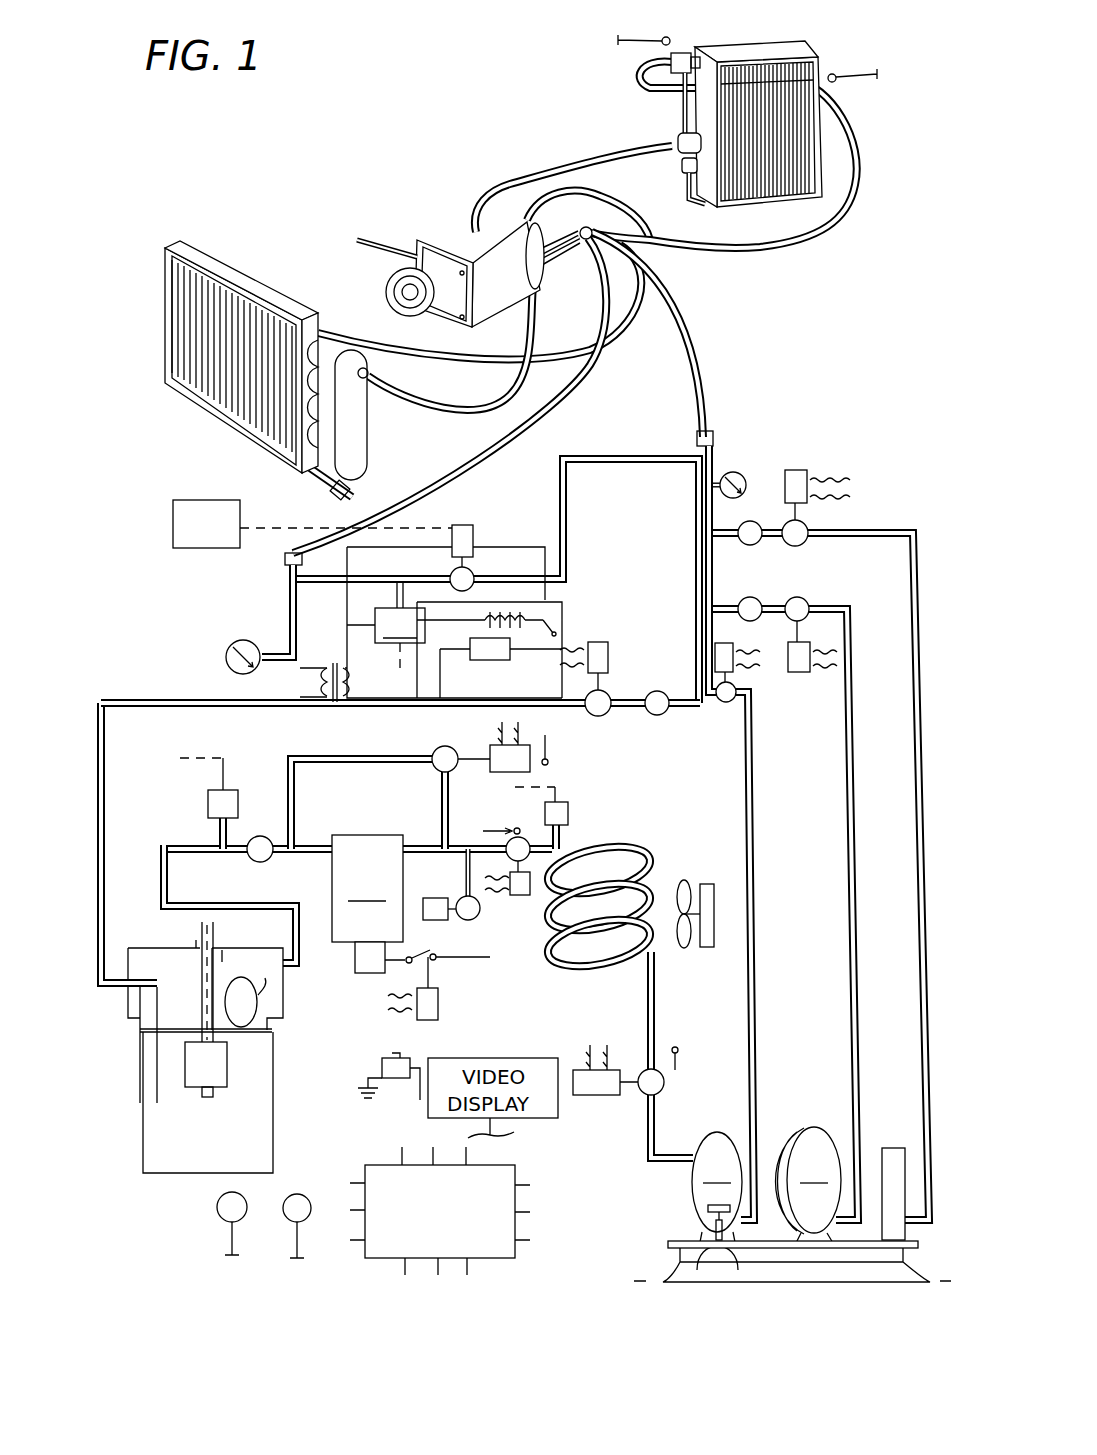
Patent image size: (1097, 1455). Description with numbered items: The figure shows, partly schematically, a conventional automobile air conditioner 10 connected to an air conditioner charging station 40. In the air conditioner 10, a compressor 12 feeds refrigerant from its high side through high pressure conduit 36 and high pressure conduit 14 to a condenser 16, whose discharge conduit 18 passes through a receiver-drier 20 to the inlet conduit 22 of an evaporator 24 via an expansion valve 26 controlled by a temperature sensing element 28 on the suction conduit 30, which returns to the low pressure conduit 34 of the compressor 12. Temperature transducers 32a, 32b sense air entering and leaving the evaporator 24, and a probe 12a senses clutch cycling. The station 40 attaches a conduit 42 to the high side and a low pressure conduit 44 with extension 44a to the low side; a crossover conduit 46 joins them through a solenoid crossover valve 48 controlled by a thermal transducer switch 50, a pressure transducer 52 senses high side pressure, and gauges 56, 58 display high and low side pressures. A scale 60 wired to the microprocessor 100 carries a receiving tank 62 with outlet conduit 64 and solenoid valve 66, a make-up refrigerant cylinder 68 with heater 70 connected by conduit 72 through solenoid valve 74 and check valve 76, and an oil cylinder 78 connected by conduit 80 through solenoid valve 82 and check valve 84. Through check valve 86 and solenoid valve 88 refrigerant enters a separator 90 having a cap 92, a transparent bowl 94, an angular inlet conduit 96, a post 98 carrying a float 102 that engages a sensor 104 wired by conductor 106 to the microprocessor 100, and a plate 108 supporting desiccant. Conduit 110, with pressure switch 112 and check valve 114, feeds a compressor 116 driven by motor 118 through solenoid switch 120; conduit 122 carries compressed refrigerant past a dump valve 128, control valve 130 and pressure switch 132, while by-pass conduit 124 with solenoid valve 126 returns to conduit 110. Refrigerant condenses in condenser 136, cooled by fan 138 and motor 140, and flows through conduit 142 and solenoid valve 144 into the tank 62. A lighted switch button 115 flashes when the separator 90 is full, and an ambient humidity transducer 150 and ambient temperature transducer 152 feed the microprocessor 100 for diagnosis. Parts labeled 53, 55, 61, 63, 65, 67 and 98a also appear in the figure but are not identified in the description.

The air conditioner 10 is at (501, 147).
The compressor 12 is at (457, 245).
The probe 12a is at (388, 243).
The high pressure conduit 14 is at (582, 178).
The condenser 16 is at (210, 207).
The discharge conduit 18 is at (614, 157).
The receiver-drier 20 is at (362, 470).
The inlet conduit 22 is at (678, 185).
The evaporator 24 is at (776, 30).
The expansion valve 26 is at (677, 143).
The temperature sensing element 28 is at (668, 55).
The suction conduit 30 is at (857, 202).
The temperature transducer 32a is at (837, 82).
The temperature transducer 32b is at (661, 39).
The low pressure conduit 34 is at (548, 240).
The high pressure conduit 36 is at (508, 186).
The air conditioner charging station 40 is at (735, 396).
The conduit 42 is at (588, 415).
The low pressure conduit 44 is at (685, 352).
The extension of low pressure conduit 44a is at (705, 588).
The crossover conduit 46 is at (648, 470).
The solenoid operated crossover valve 48 is at (474, 535).
The thermal transducer switch 50 is at (173, 515).
The pressure operated switch 52 is at (386, 627).
The transformer 53 is at (343, 663).
The relay 55 is at (565, 628).
The gauge 56 is at (236, 645).
The gauge 58 is at (744, 474).
The scale 60 is at (912, 1255).
The tank inlet line 61 is at (703, 1134).
The receiving tank 62 is at (717, 1187).
The tank valve housing 63 is at (700, 1262).
The outlet conduit 64 is at (754, 1002).
The tank valve 65 is at (706, 1205).
The solenoid valve 66 is at (725, 676).
The tank outlet 67 is at (710, 1228).
The cylinder 68 is at (814, 1185).
The heater 70 is at (788, 1138).
The conduit 72 is at (852, 1018).
The solenoid valve 74 is at (800, 672).
The check valve 76 is at (748, 600).
The oil storing cylinder 78 is at (891, 1148).
The conduit 80 is at (922, 1018).
The solenoid operated valve 82 is at (802, 475).
The check valve 84 is at (783, 546).
The check valve 86 is at (668, 678).
The solenoid valve 88 is at (598, 716).
The separator 90 is at (292, 1138).
The cap 92 is at (283, 998).
The bowl 94 is at (143, 1145).
The inlet conduit 96 is at (142, 977).
The post 98 is at (213, 945).
The tube lower portion 98a is at (145, 1100).
The microprocessor 100 is at (515, 1220).
The float 102 is at (228, 1080).
The sensor 104 is at (192, 1035).
The conductor 106 is at (207, 936).
The plate 108 is at (175, 1028).
The conduit 110 is at (197, 849).
The pressure switch 112 is at (210, 800).
The check valve 114 is at (272, 858).
The switch button 115 is at (385, 1062).
The compressor 116 is at (367, 888).
The motor 118 is at (356, 962).
The solenoid switch 120 is at (446, 1010).
The conduit 122 is at (445, 835).
The by-pass conduit 124 is at (316, 756).
The solenoid operated valve 126 is at (440, 748).
The solenoid operated dump valve 128 is at (460, 895).
The solenoid operated control valve 130 is at (526, 894).
The pressure switch 132 is at (568, 818).
The condenser 136 is at (558, 957).
The fan 138 is at (676, 890).
The motor 140 is at (708, 938).
The conduit 142 is at (650, 1002).
The solenoid valve 144 is at (603, 1096).
The ambient humidity transducer 150 is at (218, 1198).
The ambient temperature transducer 152 is at (290, 1195).